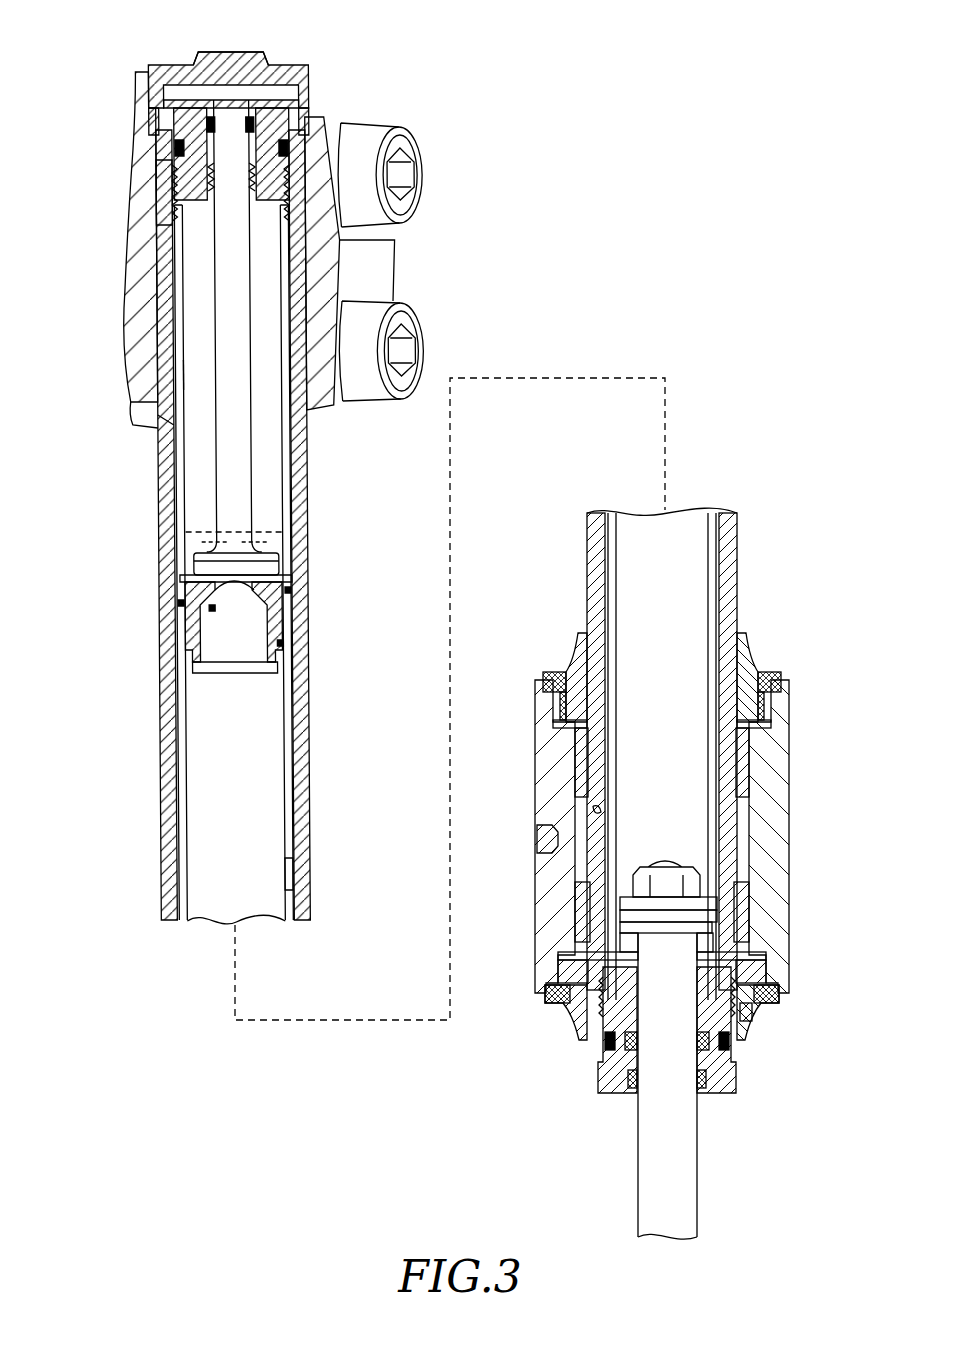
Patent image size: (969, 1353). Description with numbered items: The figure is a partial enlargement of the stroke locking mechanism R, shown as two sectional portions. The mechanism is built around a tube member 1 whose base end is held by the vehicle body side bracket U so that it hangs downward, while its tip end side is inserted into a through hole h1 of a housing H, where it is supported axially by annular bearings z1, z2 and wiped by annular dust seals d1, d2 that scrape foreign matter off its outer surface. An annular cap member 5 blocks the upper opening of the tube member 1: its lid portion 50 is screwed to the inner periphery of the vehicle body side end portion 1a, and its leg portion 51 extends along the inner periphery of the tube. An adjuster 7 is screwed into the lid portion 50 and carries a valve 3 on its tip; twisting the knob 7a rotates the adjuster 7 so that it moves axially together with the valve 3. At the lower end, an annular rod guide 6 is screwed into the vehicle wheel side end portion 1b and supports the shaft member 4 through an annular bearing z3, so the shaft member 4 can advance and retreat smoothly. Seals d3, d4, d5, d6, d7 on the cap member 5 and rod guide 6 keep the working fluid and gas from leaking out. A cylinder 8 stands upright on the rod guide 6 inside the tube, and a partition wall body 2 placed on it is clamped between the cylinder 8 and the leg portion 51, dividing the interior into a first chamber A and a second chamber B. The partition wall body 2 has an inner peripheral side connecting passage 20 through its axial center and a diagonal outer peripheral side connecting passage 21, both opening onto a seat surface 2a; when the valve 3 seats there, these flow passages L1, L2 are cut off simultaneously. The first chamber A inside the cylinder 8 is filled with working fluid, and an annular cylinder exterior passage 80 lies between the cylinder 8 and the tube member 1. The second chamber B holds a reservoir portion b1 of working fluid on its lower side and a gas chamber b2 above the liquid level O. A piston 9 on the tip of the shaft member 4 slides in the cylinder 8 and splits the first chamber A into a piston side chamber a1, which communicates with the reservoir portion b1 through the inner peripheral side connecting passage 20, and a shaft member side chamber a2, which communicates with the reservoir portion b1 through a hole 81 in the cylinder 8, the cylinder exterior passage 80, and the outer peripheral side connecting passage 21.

The tube member 1 is at (160, 700).
The vehicle body side end portion of the tube member 1a is at (162, 168).
The vehicle wheel side end portion of the tube member 1b is at (586, 1022).
The partition wall body 2 is at (282, 645).
The seat surface 2a is at (192, 533).
The valve 3 is at (276, 572).
The shaft member 4 is at (683, 1193).
The cap member 5 is at (157, 108).
The rod guide 6 is at (606, 1077).
The adjuster 7 is at (262, 150).
The knob 7a is at (283, 68).
The cylinder 8 is at (712, 586).
The piston 9 is at (742, 898).
The inner peripheral side connecting passage 20 is at (248, 600).
The outer peripheral side connecting passage 21 is at (176, 606).
The lid portion 50 is at (168, 198).
The leg portion 51 is at (168, 420).
The cylinder exterior passage 80 is at (294, 873).
The hole 81 is at (600, 947).
The first chamber A is at (214, 867).
The second chamber B is at (178, 318).
The housing H is at (782, 746).
The flow passage L1 is at (198, 650).
The flow passage L2 is at (184, 822).
The liquid level O is at (260, 532).
The stroke locking mechanism R is at (446, 228).
The vehicle body side bracket U is at (375, 272).
The piston side chamber a1 is at (672, 808).
The shaft member side chamber a2 is at (705, 944).
The reservoir portion b1 is at (272, 548).
The gas chamber b2 is at (194, 375).
The dust seal d1 is at (576, 668).
The dust seal d2 is at (754, 1034).
The seal d3 is at (172, 148).
The seal d4 is at (202, 112).
The seal d5 is at (608, 1042).
The seal d6 is at (614, 1062).
The seal d7 is at (718, 1064).
The through hole h1 is at (596, 814).
The annular bearing z1 is at (576, 752).
The annular bearing z2 is at (575, 894).
The annular bearing z3 is at (755, 1024).